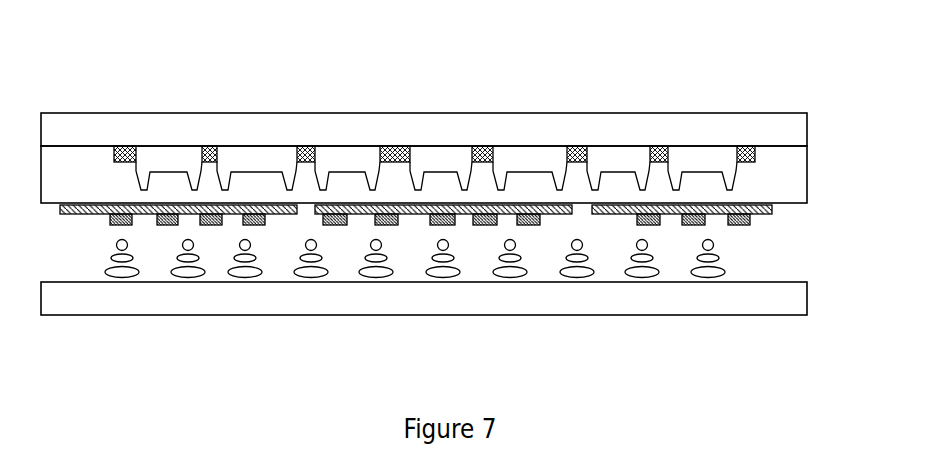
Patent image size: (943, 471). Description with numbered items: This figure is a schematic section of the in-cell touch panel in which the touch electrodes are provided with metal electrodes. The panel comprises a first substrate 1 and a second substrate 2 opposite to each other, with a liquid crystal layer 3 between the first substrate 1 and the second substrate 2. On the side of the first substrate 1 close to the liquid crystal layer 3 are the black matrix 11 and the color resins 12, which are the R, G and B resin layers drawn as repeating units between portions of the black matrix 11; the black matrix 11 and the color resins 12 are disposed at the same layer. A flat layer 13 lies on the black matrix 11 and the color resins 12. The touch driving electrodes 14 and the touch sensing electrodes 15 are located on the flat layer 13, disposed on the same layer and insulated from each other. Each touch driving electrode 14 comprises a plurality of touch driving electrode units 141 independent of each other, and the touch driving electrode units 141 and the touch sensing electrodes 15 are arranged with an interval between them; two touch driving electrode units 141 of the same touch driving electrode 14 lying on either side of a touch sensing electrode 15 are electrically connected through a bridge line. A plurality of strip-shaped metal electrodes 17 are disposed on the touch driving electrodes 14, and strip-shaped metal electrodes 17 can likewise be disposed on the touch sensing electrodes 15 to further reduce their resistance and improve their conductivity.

The first substrate 1 is at (58, 138).
The black matrix 11 is at (210, 150).
The color resins 12 is at (283, 158).
The flat layer 13 is at (798, 193).
The touch driving electrodes 14 is at (416, 210).
The touch driving electrode units 141 is at (127, 208).
The touch sensing electrodes 15 is at (425, 208).
The strip-shaped metal electrodes 17 is at (745, 228).
The second substrate 2 is at (75, 297).
The liquid crystal layer 3 is at (708, 270).